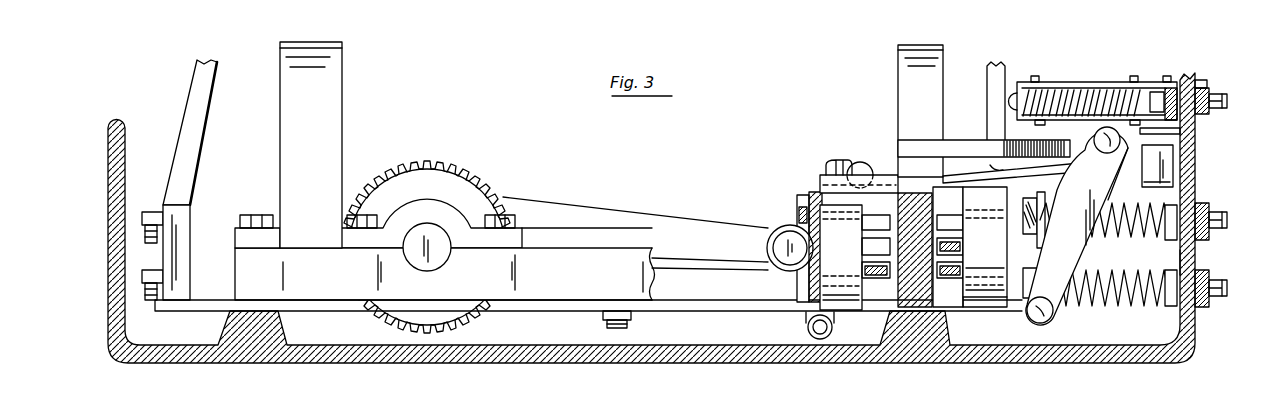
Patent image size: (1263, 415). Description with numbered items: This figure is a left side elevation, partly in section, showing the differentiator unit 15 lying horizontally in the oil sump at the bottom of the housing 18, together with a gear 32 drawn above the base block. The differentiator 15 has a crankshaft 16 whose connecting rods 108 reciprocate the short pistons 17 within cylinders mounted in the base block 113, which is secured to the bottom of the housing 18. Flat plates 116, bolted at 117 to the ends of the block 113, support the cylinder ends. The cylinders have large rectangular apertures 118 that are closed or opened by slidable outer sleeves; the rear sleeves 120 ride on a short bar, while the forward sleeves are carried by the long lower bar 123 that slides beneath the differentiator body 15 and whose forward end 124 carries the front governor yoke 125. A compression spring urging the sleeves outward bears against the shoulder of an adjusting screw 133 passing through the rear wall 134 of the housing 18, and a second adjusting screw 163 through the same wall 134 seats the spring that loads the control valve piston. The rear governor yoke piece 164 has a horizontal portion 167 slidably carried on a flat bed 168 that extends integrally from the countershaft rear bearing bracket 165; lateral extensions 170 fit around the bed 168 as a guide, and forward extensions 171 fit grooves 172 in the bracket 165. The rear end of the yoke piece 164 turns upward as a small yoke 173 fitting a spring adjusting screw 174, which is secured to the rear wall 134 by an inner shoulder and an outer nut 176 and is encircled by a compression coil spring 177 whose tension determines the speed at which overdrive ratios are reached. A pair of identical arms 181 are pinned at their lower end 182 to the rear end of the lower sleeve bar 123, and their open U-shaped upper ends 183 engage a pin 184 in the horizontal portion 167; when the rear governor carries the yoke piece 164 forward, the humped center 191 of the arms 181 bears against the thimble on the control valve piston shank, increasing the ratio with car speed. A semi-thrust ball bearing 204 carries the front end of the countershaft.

The differentiator unit 15 is at (772, 186).
The crankshaft 16 is at (443, 262).
The pistons 17 is at (878, 222).
The housing 18 is at (636, 369).
The gear 32 is at (440, 158).
The connecting rod 108 is at (620, 207).
The base block 113 is at (572, 300).
The flat plates 116 is at (818, 190).
The bolts 117 is at (797, 213).
The rectangular apertures 118 is at (868, 232).
The rear sleeves 120 is at (1003, 250).
The lower sleeve bar 123 is at (770, 306).
The forward end of lower bar 124 is at (163, 306).
The front governor yoke 125 is at (200, 127).
The adjusting screw 133 is at (1227, 308).
The rear wall 134 is at (1190, 262).
The adjusting screw 163 is at (1238, 195).
The rear governor yoke piece 164 is at (1005, 72).
The countershaft rear bearing bracket 165 is at (898, 52).
The horizontal portion 167 is at (1094, 140).
The flat bed 168 is at (1000, 166).
The lateral extensions 170 is at (1175, 157).
The forward extensions 171 is at (946, 158).
The grooves 172 is at (898, 147).
The small yoke 173 is at (1185, 130).
The spring adjusting screw 174 is at (1212, 88).
The nut 176 is at (1200, 80).
The compression coil spring 177 is at (1088, 94).
The arms 181 is at (1075, 263).
The lower end of arms 182 is at (1055, 318).
The U-shaped upper ends 183 is at (1115, 172).
The pin 184 is at (1090, 152).
The humped center 191 is at (1046, 222).
The semi-thrust ball bearing 204 is at (342, 94).